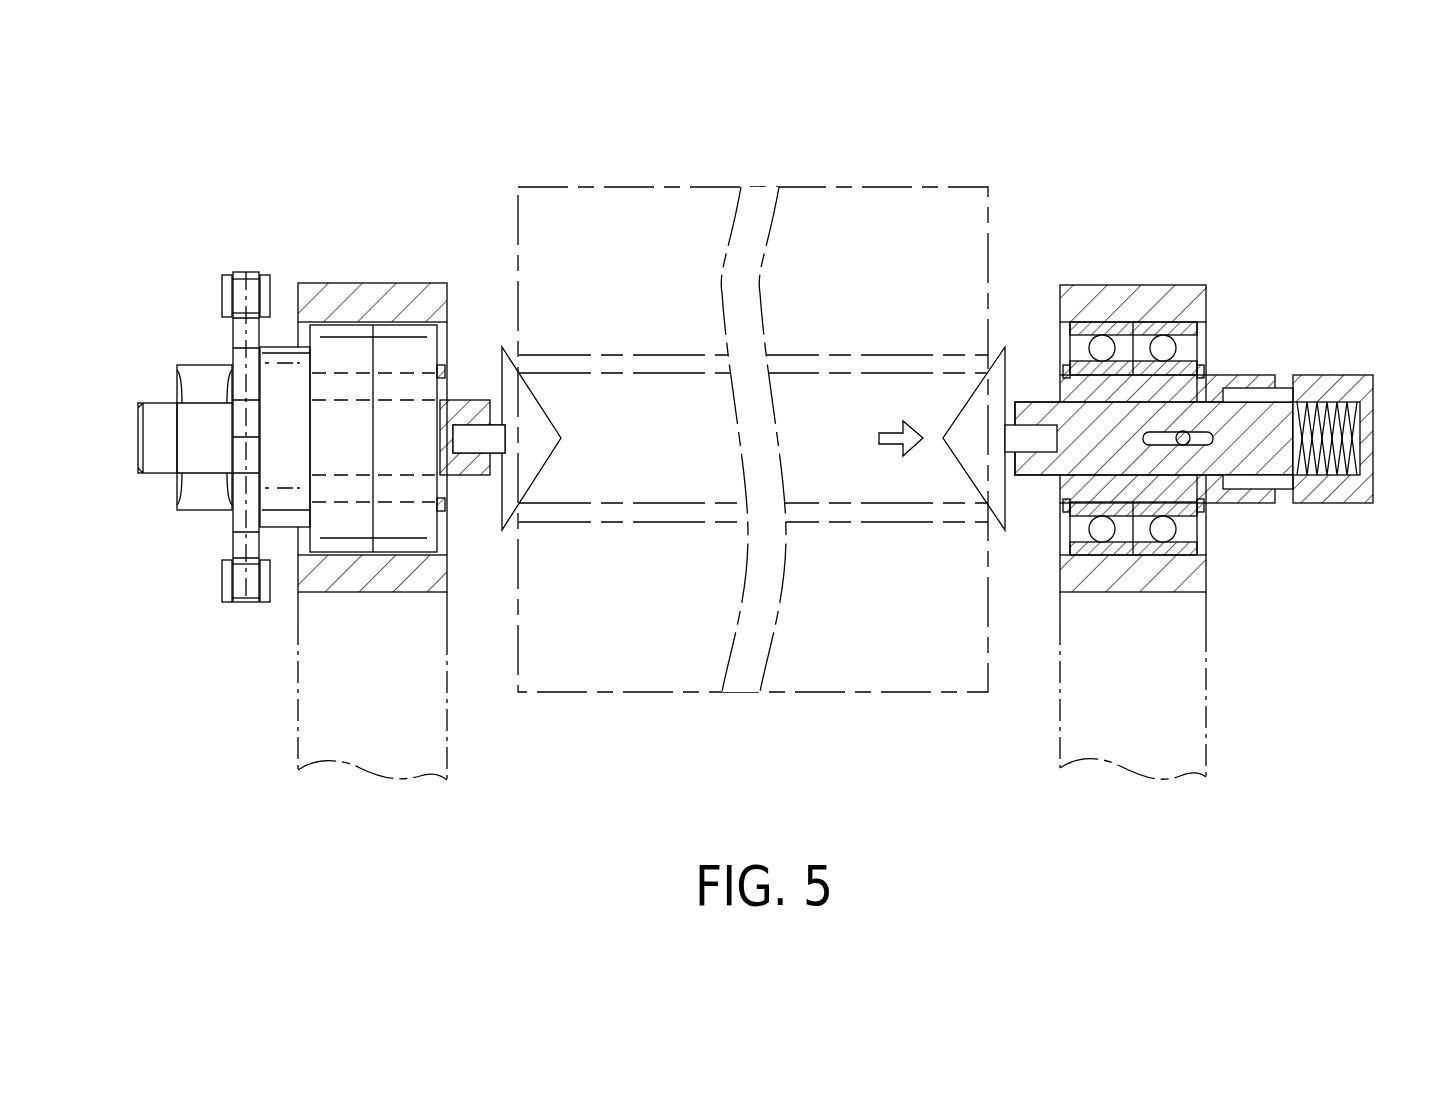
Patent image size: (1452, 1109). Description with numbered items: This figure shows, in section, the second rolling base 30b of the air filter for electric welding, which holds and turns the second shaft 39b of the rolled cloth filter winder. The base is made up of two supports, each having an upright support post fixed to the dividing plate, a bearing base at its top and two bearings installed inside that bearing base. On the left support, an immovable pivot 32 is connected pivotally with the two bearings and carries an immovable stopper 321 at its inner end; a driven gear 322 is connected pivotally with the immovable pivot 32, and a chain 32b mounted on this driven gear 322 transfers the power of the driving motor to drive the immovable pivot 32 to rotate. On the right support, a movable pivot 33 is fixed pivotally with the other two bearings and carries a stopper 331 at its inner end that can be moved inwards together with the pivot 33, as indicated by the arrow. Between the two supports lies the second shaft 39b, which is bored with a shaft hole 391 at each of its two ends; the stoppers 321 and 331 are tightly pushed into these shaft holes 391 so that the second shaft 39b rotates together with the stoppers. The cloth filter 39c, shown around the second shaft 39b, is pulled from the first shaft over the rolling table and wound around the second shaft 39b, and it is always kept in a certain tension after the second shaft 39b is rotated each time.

The second rolling base 30b is at (1300, 270).
The immovable pivot 32 is at (197, 363).
The chain 32b is at (222, 583).
The immovable stopper 321 is at (530, 383).
The driven gear 322 is at (232, 335).
The movable pivot 33 is at (1376, 412).
The stopper 331 is at (976, 395).
The second shaft 39b is at (681, 349).
The cloth filter 39c is at (882, 187).
The shaft hole 391 is at (580, 503).